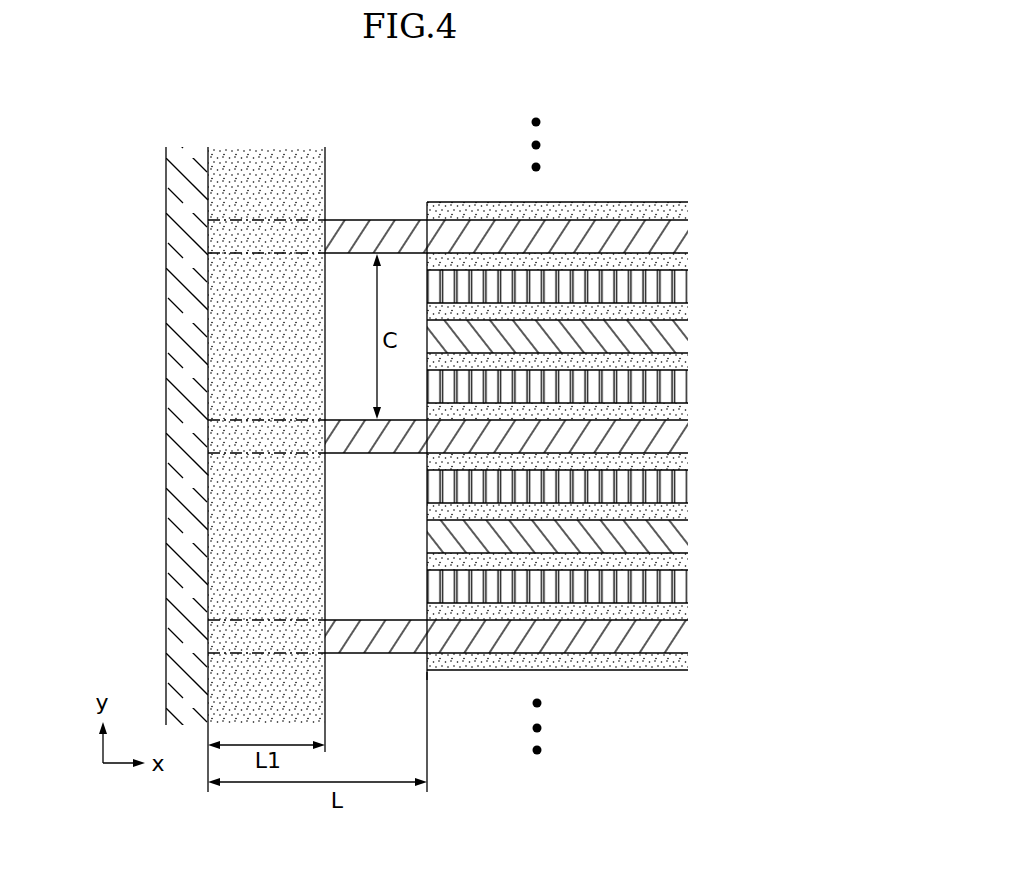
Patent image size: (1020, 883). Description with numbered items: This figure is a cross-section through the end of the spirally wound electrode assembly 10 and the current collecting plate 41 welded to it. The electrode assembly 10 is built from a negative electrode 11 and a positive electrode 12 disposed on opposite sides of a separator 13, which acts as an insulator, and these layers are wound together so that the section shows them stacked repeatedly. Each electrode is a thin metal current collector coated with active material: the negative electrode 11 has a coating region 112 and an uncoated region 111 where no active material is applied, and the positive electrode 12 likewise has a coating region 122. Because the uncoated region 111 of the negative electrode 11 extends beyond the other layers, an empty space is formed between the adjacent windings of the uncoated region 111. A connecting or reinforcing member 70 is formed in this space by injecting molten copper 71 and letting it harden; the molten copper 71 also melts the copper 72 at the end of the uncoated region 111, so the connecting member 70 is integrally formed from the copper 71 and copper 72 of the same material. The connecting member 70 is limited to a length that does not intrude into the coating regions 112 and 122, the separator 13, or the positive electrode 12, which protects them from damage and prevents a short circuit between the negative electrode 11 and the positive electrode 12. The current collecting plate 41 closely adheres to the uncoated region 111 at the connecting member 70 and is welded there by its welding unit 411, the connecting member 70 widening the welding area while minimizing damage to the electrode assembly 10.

The electrode assembly 10 is at (533, 486).
The negative electrode 11 is at (506, 408).
The uncoated region 111 is at (385, 236).
The coating region 112 is at (493, 264).
The positive electrode 12 is at (584, 359).
The coating region 122 is at (594, 361).
The separator 13 is at (668, 285).
The current collecting plate 41 is at (149, 436).
The welding unit 411 is at (187, 336).
The connecting member 70 is at (266, 392).
The copper 71 is at (240, 270).
The copper 72 is at (293, 235).